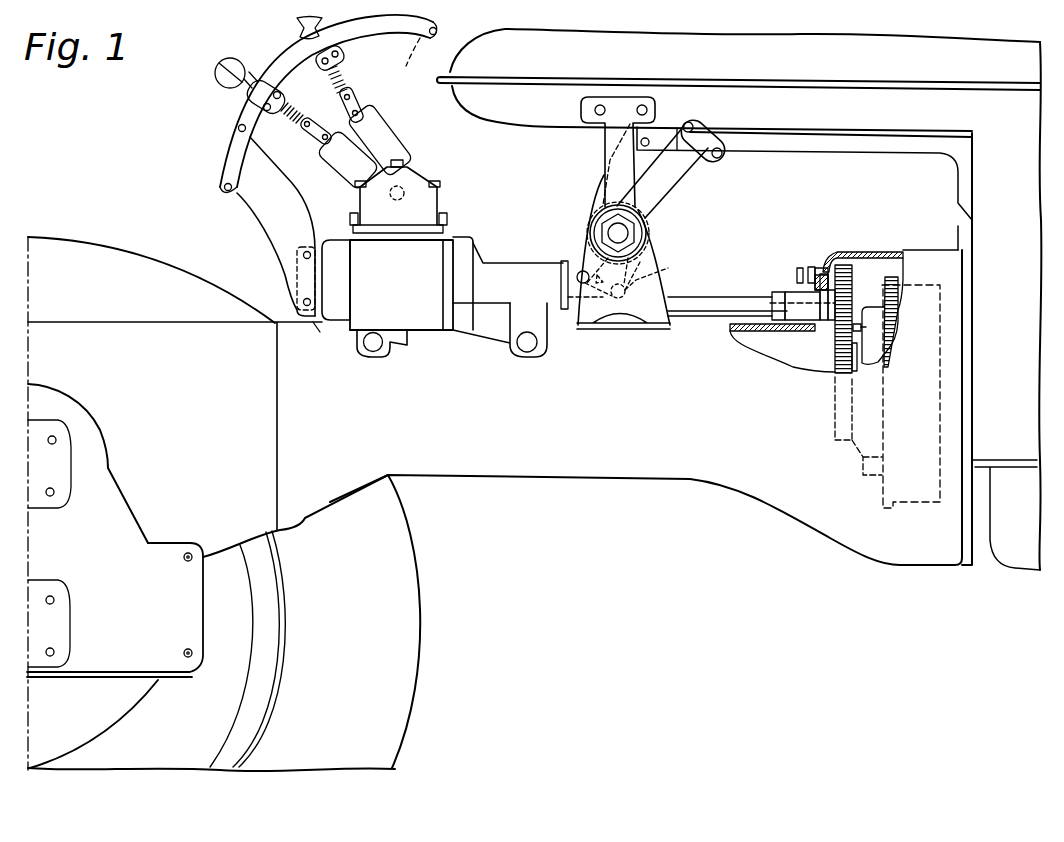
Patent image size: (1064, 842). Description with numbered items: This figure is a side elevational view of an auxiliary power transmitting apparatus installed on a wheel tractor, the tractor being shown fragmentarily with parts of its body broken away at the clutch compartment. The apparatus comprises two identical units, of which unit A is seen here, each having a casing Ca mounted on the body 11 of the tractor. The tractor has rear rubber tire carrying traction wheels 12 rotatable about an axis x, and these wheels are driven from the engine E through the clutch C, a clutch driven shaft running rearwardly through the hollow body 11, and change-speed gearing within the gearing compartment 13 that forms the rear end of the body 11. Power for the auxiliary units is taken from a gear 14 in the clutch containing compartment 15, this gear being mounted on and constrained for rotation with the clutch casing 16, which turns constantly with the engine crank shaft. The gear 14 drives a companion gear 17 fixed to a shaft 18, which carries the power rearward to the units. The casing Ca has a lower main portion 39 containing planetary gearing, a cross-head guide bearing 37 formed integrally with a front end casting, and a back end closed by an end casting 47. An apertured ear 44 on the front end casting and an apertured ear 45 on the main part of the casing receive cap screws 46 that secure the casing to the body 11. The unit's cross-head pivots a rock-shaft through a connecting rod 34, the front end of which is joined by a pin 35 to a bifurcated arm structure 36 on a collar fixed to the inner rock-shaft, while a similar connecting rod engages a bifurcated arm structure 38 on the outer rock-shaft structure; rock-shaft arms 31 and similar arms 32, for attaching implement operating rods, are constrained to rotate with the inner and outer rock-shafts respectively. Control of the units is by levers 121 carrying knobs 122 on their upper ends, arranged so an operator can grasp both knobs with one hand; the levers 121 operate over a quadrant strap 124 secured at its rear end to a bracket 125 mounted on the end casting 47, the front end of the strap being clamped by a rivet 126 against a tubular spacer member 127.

The body 11 is at (489, 482).
The traction wheels 12 is at (412, 695).
The gearing compartment 13 is at (218, 393).
The gear 14 is at (826, 370).
The clutch containing compartment 15 is at (914, 250).
The clutch casing 16 is at (870, 332).
The companion gear 17 is at (847, 266).
The shaft 18 is at (710, 298).
The rock-shaft arms 31 is at (604, 148).
The arms 32 is at (688, 168).
The connecting rod 34 is at (575, 297).
The pin 35 is at (565, 265).
The bifurcated arm structure 36 is at (580, 270).
The cross-head guide bearing 37 is at (503, 272).
The bifurcated arm structure 38 is at (657, 271).
The lower main portion 39 is at (350, 228).
The apertured ear 44 is at (512, 348).
The apertured ear 45 is at (357, 352).
The cap screws 46 is at (376, 350).
The end casting 47 is at (319, 333).
The levers 121 is at (368, 118).
The knobs 122 is at (294, 30).
The quadrant strap 124 is at (376, 32).
The bracket 125 is at (264, 203).
The rivet 126 is at (430, 37).
The tubular spacer member 127 is at (409, 60).
The unit A is at (460, 231).
The clutch C is at (880, 262).
The casing Ca is at (398, 289).
The engine E is at (739, 299).
The axis x is at (28, 627).